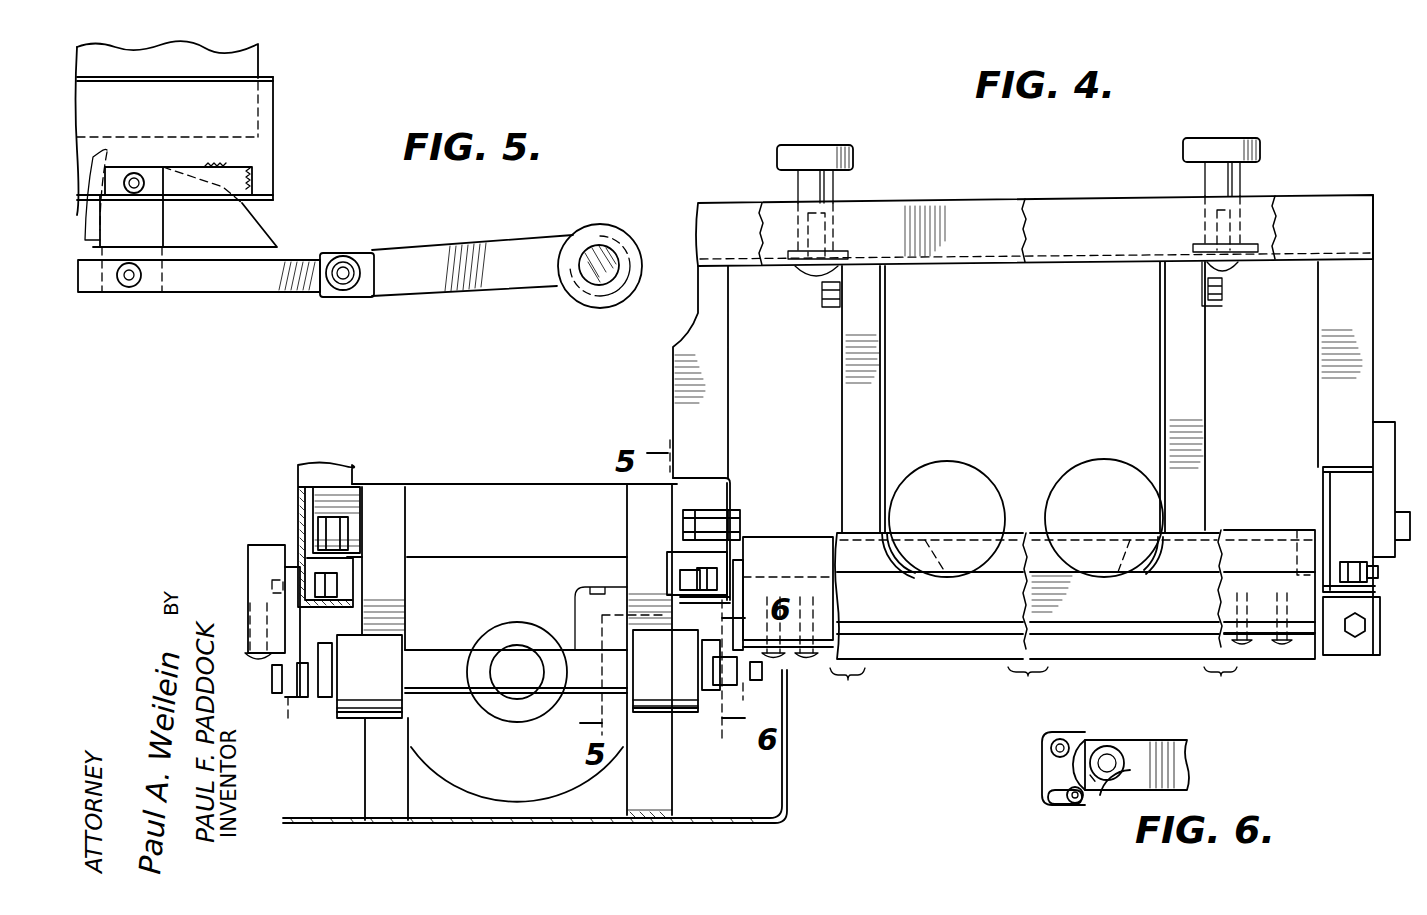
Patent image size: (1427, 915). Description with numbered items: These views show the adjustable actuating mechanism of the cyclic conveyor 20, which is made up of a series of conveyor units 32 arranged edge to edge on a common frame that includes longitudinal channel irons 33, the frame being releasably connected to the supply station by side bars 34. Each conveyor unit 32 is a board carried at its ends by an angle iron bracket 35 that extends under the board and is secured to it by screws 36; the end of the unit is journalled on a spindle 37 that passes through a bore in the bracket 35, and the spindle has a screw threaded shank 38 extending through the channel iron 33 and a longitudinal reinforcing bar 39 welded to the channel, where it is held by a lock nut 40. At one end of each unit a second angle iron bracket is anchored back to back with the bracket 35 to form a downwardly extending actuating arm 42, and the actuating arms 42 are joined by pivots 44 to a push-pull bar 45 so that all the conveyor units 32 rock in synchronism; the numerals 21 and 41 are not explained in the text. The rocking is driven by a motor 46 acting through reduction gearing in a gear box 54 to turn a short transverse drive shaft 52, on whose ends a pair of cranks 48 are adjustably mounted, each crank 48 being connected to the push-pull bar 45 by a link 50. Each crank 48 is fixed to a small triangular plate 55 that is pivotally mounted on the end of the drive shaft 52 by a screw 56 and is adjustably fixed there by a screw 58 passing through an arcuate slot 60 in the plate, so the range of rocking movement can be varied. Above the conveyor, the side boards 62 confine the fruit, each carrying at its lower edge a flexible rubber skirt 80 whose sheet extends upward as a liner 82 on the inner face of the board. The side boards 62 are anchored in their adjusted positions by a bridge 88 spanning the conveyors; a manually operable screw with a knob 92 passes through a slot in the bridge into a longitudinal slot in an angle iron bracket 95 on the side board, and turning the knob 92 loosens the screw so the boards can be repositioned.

In FIG. 4, the cyclic conveyor 20 is at (993, 667).
In FIG. 4, the rollers 21 is at (1057, 502).
In FIG. 5, the conveyor unit 32 is at (247, 232).
In FIG. 4, the conveyor unit 32 is at (892, 613).
In FIG. 5, the longitudinal channel iron 33 is at (273, 136).
In FIG. 4, the longitudinal channel iron 33 is at (1342, 466).
In FIG. 4, the side bar 34 is at (1383, 437).
In FIG. 5, the angle iron bracket 35 is at (150, 230).
In FIG. 4, the angle iron bracket 35 is at (1312, 587).
In FIG. 4, the screws 36 is at (1282, 641).
In FIG. 4, the spindle 37 is at (1297, 540).
In FIG. 5, the screw threaded shank 38 is at (143, 174).
In FIG. 4, the screw threaded shank 38 is at (1367, 570).
In FIG. 5, the longitudinal reinforcing bar 39 is at (245, 180).
In FIG. 4, the longitudinal reinforcing bar 39 is at (1335, 567).
In FIG. 5, the lock nut 40 is at (136, 178).
In FIG. 4, the lock nut 40 is at (1350, 573).
In FIG. 4, the lever assembly 41 is at (847, 686).
In FIG. 5, the actuating arm 42 is at (157, 290).
In FIG. 4, the actuating arm 42 is at (743, 683).
In FIG. 5, the pivot 44 is at (130, 283).
In FIG. 4, the pivot 44 is at (760, 667).
In FIG. 5, the push-pull bar 45 is at (242, 283).
In FIG. 4, the push-pull bar 45 is at (723, 687).
In FIG. 4, the motor 46 is at (580, 770).
In FIG. 5, the crank 48 is at (560, 263).
In FIG. 4, the crank 48 is at (713, 648).
In FIG. 6, the crank 48 is at (1110, 762).
In FIG. 5, the link 50 is at (398, 257).
In FIG. 4, the link 50 is at (703, 657).
In FIG. 6, the link 50 is at (1170, 745).
In FIG. 5, the transverse drive shaft 52 is at (610, 253).
In FIG. 4, the transverse drive shaft 52 is at (583, 653).
In FIG. 4, the gear box 54 is at (503, 742).
In FIG. 5, the triangular plate 55 is at (625, 305).
In FIG. 4, the triangular plate 55 is at (690, 710).
In FIG. 6, the triangular plate 55 is at (1052, 765).
In FIG. 6, the screw 56 is at (1063, 744).
In FIG. 6, the screw 58 is at (1074, 803).
In FIG. 6, the arcuate slot 60 is at (1050, 800).
In FIG. 5, the side board 62 is at (253, 63).
In FIG. 4, the side board 62 is at (1195, 380).
In FIG. 4, the flexible rubber skirt 80 is at (1159, 573).
In FIG. 4, the liner 82 is at (1163, 372).
In FIG. 4, the bridge 88 is at (1038, 208).
In FIG. 4, the knob 92 is at (1240, 138).
In FIG. 4, the angle iron bracket 95 is at (1210, 303).